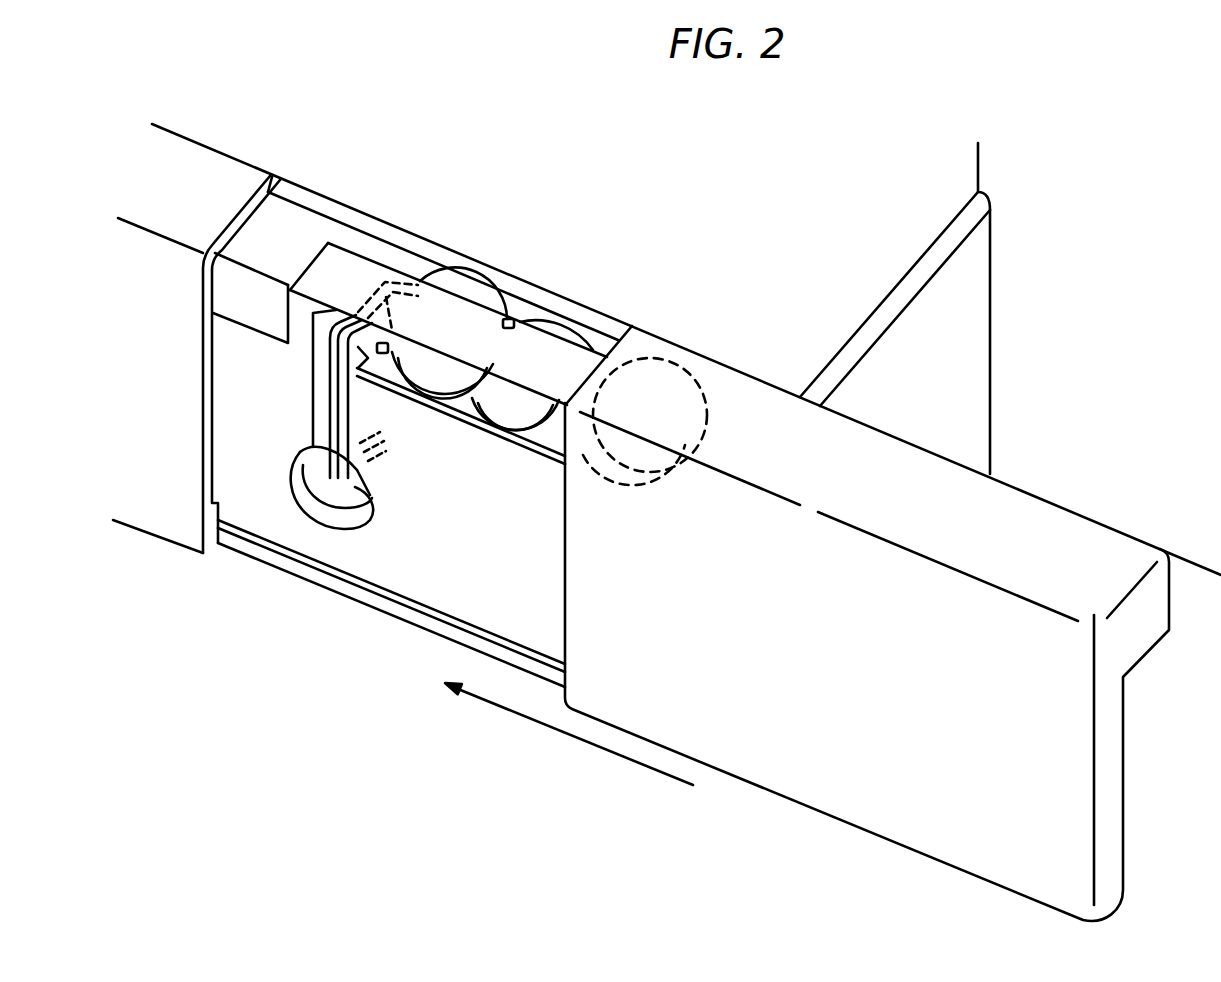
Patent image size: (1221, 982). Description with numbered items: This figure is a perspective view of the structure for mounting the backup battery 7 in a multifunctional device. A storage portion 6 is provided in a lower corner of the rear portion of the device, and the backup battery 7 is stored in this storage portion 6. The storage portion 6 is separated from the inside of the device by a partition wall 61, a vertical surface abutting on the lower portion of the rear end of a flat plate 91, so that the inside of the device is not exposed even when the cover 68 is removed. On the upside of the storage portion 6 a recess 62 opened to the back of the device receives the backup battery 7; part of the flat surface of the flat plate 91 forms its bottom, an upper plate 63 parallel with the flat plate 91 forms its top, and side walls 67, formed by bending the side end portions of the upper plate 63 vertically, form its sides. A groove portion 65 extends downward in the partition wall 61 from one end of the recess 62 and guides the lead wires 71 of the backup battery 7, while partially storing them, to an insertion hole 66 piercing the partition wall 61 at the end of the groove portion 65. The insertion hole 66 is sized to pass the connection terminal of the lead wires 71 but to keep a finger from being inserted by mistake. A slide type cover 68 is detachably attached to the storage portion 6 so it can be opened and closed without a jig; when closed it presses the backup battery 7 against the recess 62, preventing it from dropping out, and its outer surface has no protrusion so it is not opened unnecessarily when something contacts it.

The storage portion 6 is at (244, 568).
The backup battery 7 is at (472, 283).
The partition wall 61 is at (412, 580).
The recess 62 is at (467, 397).
The upper plate 63 is at (538, 352).
The groove portion 65 is at (330, 373).
The insertion hole 66 is at (348, 497).
The side walls 67 is at (302, 327).
The cover 68 is at (617, 688).
The lead wires 71 is at (333, 413).
The flat plate 91 is at (543, 438).